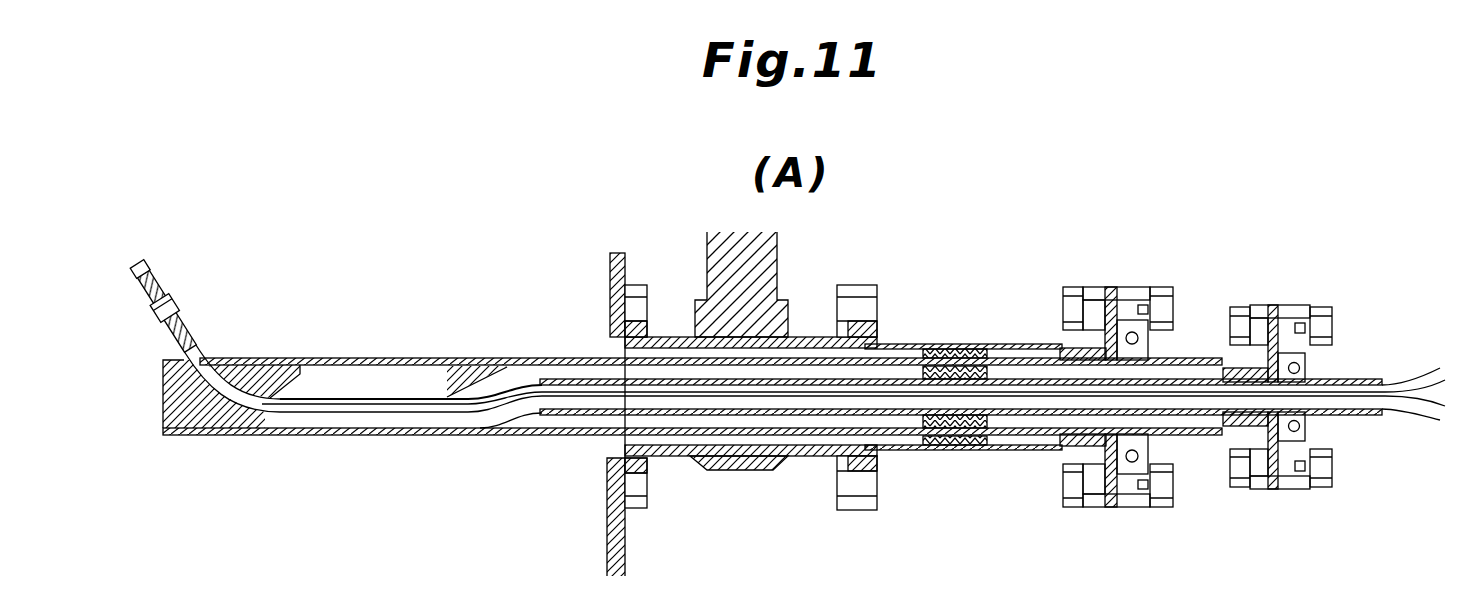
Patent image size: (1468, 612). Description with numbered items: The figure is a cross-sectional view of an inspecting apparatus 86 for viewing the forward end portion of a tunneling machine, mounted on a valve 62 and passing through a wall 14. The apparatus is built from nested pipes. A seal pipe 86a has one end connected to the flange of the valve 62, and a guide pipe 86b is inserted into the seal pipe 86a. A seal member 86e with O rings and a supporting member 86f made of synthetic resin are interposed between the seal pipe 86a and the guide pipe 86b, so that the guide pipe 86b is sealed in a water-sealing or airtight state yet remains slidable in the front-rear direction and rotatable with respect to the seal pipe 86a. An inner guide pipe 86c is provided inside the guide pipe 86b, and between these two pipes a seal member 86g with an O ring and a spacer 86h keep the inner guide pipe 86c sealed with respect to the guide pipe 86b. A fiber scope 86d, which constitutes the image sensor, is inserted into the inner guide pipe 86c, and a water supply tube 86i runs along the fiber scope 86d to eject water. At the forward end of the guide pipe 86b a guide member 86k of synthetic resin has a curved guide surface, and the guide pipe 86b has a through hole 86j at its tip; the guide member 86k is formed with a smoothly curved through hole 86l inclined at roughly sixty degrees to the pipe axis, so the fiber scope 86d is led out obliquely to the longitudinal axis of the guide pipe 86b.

The frame wall 14 is at (618, 553).
The valve 62 is at (765, 262).
The inspecting apparatus 86 is at (980, 322).
The seal pipe 86a is at (1022, 346).
The guide pipe 86b is at (895, 372).
The inner guide pipe 86c is at (570, 377).
The fiber scope 86d is at (385, 415).
The seal member 86e is at (930, 355).
The supporting member 86f is at (1120, 330).
The seal member 86g is at (983, 420).
The spacer 86h is at (1255, 480).
The water supply tube 86i is at (330, 405).
The through hole 86j is at (205, 358).
The guide member 86k is at (455, 362).
The through hole 86l is at (255, 392).